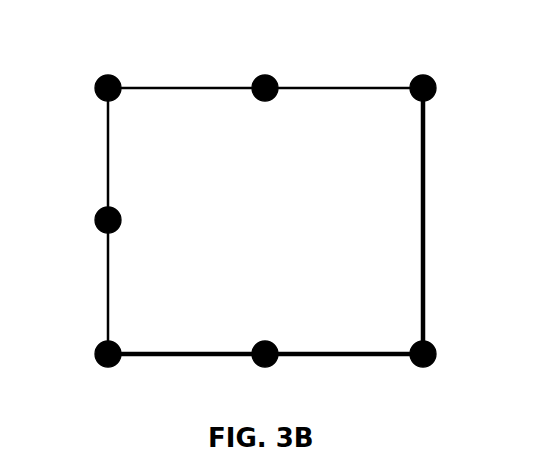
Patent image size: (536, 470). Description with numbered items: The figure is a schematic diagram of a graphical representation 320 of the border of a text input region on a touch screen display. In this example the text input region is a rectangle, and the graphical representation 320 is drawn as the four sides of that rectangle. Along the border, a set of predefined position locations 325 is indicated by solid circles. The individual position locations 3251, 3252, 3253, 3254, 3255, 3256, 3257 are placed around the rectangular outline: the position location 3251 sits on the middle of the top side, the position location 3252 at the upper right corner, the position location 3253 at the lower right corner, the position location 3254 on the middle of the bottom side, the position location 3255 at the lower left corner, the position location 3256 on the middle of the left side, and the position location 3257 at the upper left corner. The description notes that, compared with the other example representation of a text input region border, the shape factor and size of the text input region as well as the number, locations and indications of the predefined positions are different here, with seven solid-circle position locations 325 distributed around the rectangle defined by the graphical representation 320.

The graphical representation 320 is at (154, 47).
The position locations 325 is at (246, 223).
The position location 3251 is at (272, 73).
The position location 3252 is at (424, 73).
The position location 3253 is at (424, 371).
The position location 3254 is at (267, 371).
The position location 3255 is at (110, 370).
The position location 3256 is at (84, 220).
The position location 3257 is at (84, 89).